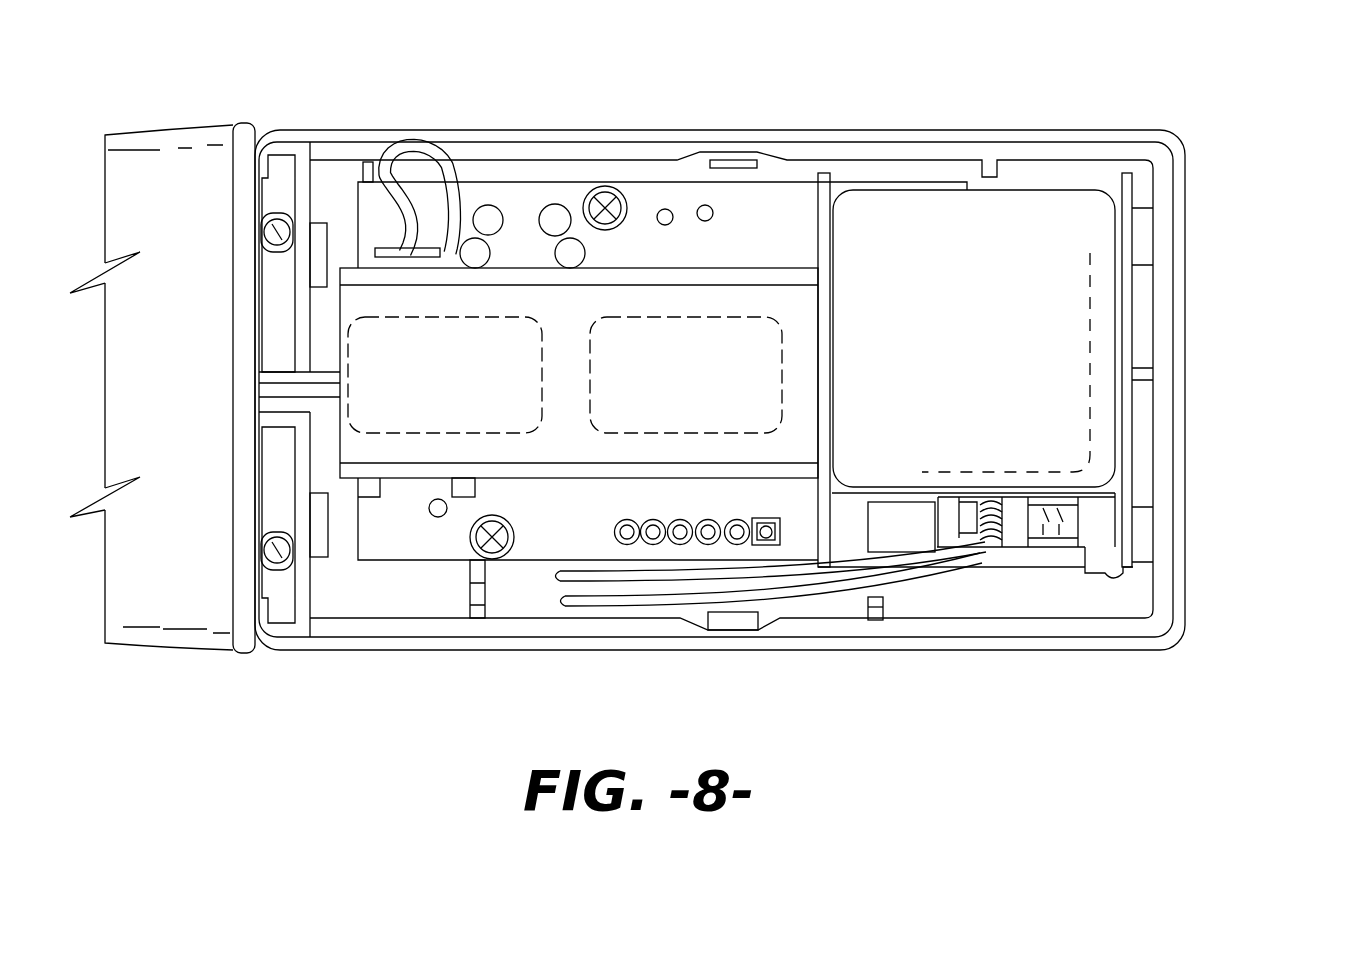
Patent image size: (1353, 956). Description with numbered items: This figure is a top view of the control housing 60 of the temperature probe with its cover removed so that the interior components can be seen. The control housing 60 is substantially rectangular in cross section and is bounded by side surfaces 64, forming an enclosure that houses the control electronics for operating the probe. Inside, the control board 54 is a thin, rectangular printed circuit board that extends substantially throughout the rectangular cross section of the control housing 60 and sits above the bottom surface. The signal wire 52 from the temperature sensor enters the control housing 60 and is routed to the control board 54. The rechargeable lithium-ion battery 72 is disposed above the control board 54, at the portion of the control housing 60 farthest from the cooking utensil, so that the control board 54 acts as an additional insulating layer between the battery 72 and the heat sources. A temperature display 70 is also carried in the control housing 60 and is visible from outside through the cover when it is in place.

The signal wire 52 is at (312, 388).
The control board 54 is at (405, 538).
The control housing 60 is at (1242, 143).
The side surfaces 64 is at (1020, 617).
The temperature display 70 is at (555, 320).
The battery 72 is at (1058, 328).